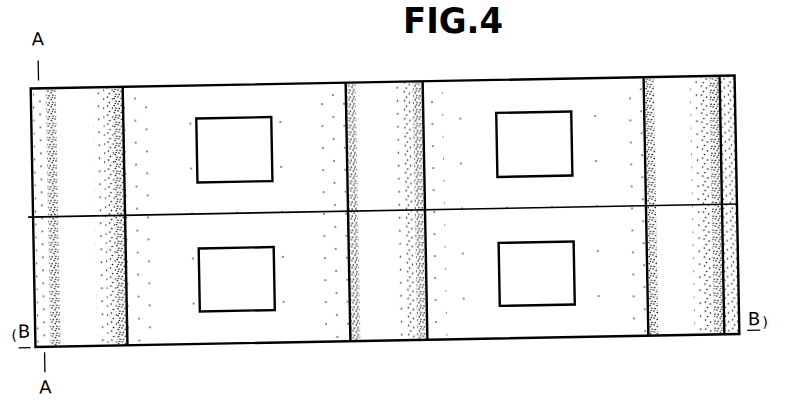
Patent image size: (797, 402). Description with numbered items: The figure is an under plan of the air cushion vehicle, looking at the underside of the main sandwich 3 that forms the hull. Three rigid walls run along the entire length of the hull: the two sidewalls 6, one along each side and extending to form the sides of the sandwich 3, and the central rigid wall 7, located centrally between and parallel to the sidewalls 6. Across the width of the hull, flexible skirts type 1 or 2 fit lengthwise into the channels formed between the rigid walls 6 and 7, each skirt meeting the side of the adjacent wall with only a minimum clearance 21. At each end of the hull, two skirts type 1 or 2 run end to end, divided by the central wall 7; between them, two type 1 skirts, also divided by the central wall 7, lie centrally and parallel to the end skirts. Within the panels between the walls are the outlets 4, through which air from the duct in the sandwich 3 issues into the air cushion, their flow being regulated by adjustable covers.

The flexible skirt type 1 is at (387, 211).
The flexible skirt type 2 is at (386, 212).
The main sandwich 3 is at (386, 211).
The outlets 4 is at (385, 212).
The sidewalls 6 is at (195, 82).
The central rigid wall 7 is at (377, 216).
The minimum clearance 21 is at (397, 212).